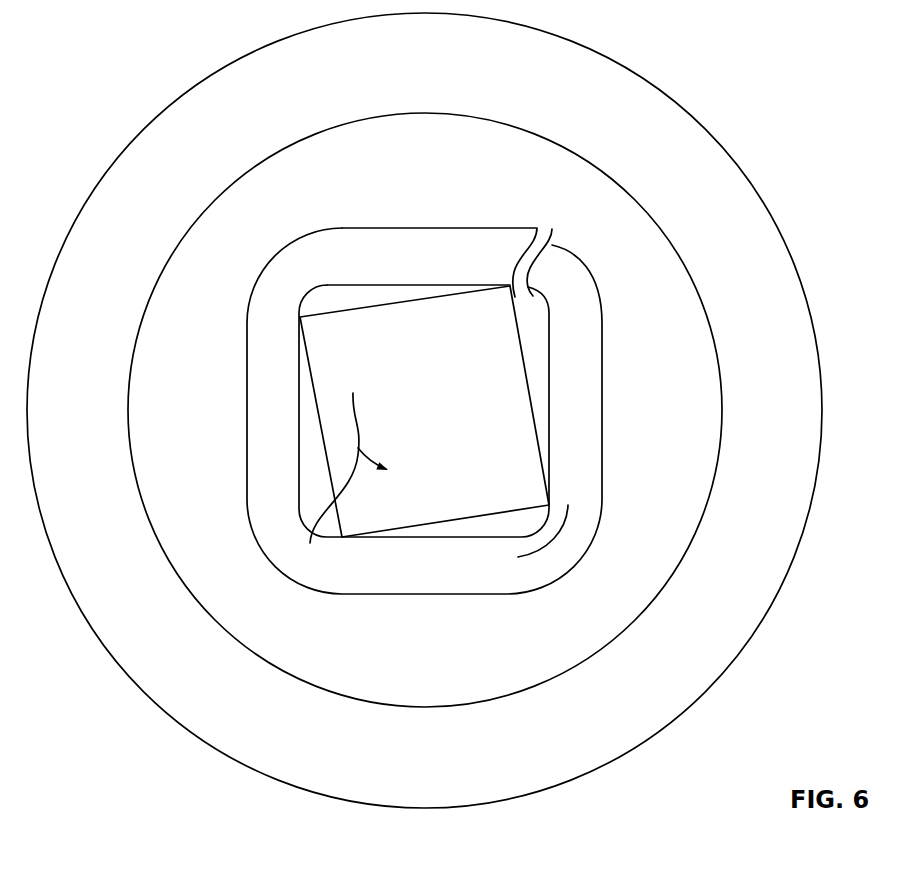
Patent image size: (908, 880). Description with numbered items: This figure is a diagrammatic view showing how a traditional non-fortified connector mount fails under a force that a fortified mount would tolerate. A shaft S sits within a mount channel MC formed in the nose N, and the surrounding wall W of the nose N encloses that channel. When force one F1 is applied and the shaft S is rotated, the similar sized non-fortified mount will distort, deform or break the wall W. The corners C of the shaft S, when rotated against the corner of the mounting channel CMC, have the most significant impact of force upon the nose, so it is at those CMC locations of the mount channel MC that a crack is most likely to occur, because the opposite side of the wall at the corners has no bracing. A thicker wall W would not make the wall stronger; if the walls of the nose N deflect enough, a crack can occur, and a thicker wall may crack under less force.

The nose N is at (650, 389).
The wall W is at (424, 411).
The mount channel MC is at (460, 537).
The shaft S is at (424, 411).
The corners of the shaft C is at (506, 289).
The corner of the mounting channel CMC is at (568, 317).
The force one F1 is at (337, 482).